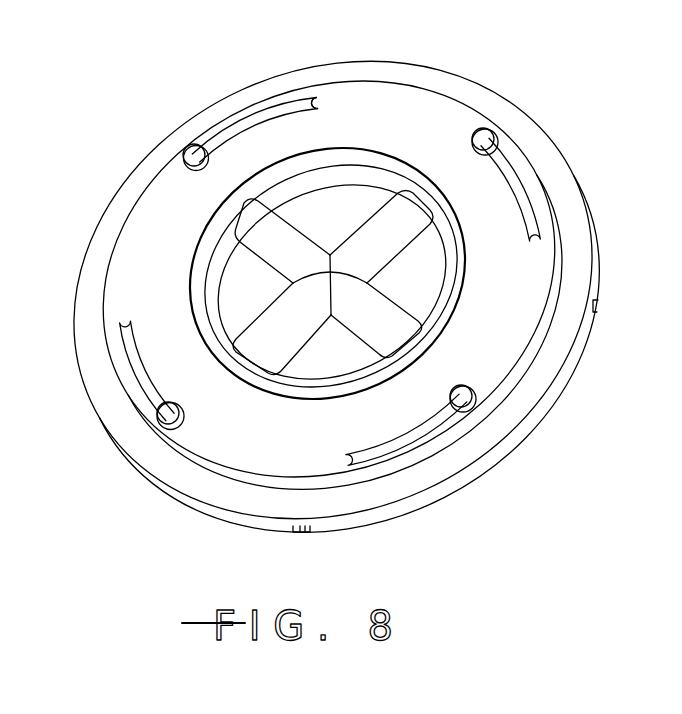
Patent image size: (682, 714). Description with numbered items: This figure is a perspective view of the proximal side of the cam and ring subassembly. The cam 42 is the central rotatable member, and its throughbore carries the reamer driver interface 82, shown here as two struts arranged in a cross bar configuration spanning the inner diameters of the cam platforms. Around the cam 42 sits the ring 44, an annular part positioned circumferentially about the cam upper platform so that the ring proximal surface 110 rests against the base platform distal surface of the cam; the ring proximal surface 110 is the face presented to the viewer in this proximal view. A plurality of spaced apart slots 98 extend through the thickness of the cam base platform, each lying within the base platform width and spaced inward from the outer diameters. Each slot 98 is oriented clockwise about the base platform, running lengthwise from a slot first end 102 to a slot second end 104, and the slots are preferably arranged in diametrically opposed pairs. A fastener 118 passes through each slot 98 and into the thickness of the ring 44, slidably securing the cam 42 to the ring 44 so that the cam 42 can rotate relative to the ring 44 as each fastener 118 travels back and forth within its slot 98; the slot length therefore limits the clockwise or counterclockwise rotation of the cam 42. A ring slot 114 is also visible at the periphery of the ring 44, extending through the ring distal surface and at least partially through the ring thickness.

The ring proximal surface 110 is at (333, 300).
The ring 44 is at (577, 247).
The cam 42 is at (513, 317).
The ring slot 114 is at (300, 532).
The reamer driver interface 82 is at (395, 227).
The slot 98 is at (245, 128).
The slot first end 102 is at (323, 105).
The fastener 118 is at (190, 155).
The slot second end 104 is at (196, 171).